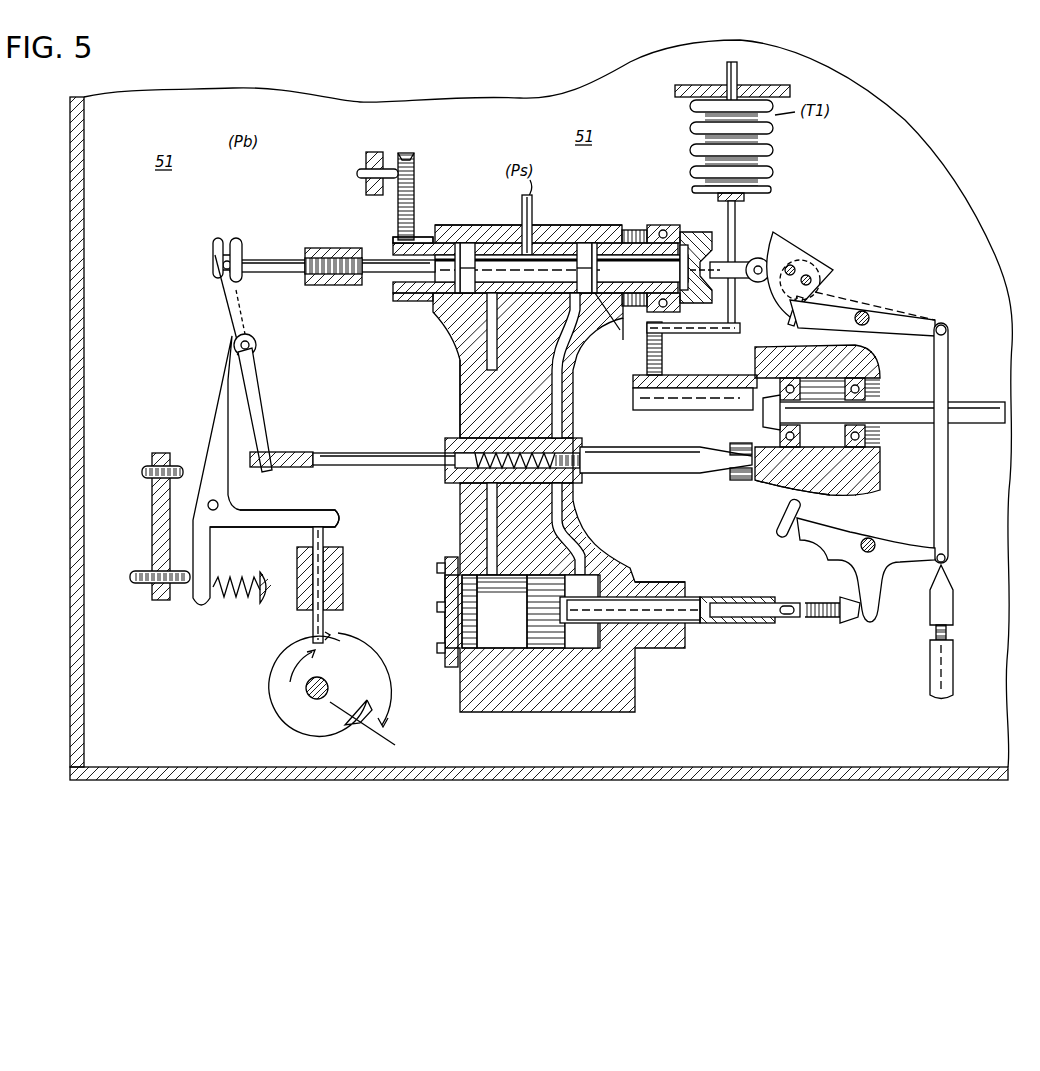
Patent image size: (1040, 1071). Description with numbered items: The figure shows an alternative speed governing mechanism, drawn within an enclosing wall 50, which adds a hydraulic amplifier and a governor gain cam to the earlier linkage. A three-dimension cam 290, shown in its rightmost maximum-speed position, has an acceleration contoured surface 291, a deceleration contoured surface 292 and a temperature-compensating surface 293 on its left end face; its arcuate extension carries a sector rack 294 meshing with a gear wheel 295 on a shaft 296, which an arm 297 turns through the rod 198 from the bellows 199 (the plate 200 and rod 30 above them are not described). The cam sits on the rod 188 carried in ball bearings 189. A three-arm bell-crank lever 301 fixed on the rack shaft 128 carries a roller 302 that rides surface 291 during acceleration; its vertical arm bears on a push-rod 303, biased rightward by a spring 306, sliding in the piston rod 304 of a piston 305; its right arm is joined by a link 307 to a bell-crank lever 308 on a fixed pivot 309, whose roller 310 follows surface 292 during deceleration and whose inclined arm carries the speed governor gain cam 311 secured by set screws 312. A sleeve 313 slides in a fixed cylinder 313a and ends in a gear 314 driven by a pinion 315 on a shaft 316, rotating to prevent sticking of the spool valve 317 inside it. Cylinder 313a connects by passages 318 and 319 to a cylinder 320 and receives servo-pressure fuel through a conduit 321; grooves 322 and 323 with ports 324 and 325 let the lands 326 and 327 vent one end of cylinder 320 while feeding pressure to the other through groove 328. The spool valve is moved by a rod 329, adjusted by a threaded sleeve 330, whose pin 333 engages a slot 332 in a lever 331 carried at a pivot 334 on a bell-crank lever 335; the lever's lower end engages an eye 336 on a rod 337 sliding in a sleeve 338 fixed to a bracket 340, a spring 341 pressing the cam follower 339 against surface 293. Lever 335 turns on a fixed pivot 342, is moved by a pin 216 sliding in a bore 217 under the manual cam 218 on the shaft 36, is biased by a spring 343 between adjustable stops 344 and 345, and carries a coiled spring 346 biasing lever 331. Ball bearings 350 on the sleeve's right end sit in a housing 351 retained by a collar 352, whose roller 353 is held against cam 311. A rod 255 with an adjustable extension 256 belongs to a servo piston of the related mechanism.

The housing wall 50 is at (70, 210).
The rod 30 is at (740, 72).
The shaft 36 is at (306, 690).
The rack shaft 128 is at (861, 548).
The rod 188 is at (958, 403).
The ball bearings 189 is at (875, 381).
The rod 198 is at (737, 212).
The bellows 199 is at (775, 136).
The plate 200 is at (722, 88).
The pin 216 is at (343, 590).
The fixed bore 217 is at (343, 573).
The cam 218 is at (292, 720).
The rod 255 is at (953, 660).
The screw-threaded adjustable extension 256 is at (953, 582).
The 3-dimension cam 290 is at (870, 472).
The acceleration contoured surface 291 is at (850, 510).
The deceleration contoured surface 292 is at (875, 353).
The contoured cam surface 293 is at (743, 445).
The sector rack 294 is at (697, 378).
The gear wheel 295 is at (647, 366).
The shaft 296 is at (680, 340).
The arm 297 is at (735, 325).
The three-arm bell-crank lever 301 is at (878, 568).
The roller 302 is at (783, 532).
The push-rod 303 is at (835, 622).
The piston rod 304 is at (655, 600).
The piston 305 is at (555, 606).
The spring 306 is at (828, 600).
The link 307 is at (948, 492).
The bell-crank lever 308 is at (941, 313).
The fixed pivot 309 is at (870, 312).
The roller 310 is at (788, 322).
The speed governor gain cam 311 is at (795, 252).
The set screws 312 is at (810, 278).
The sleeve 313 is at (570, 228).
The fixed cylinder 313a is at (560, 225).
The gear 314 is at (398, 243).
The pinion 315 is at (416, 158).
The shaft 316 is at (366, 170).
The spool valve 317 is at (460, 318).
The passage 318 is at (487, 345).
The passage 319 is at (585, 350).
The cylinder 320 is at (518, 634).
The conduit 321 is at (532, 200).
The annular groove 322 is at (460, 243).
The annular groove 323 is at (619, 314).
The port 324 is at (470, 243).
The port 325 is at (595, 243).
The land 326 is at (430, 300).
The land 327 is at (561, 268).
The annular groove and port 328 is at (535, 245).
The rod 329 is at (283, 240).
The threaded sleeve 330 is at (345, 228).
The lever 331 is at (262, 388).
The slot 332 is at (232, 282).
The pin 333 is at (224, 258).
The pivot 334 is at (258, 347).
The bell-crank lever 335 is at (283, 510).
The eye 336 is at (276, 452).
The rod 337 is at (392, 445).
The sleeve 338 is at (445, 440).
The cam follower 339 is at (660, 437).
The bracket 340 is at (460, 389).
The spring 341 is at (578, 435).
The fixed pivot 342 is at (220, 503).
The spring 343 is at (236, 603).
The adjustable stop 344 is at (140, 590).
The adjustable stop 345 is at (161, 453).
The coiled spring 346 is at (236, 338).
The ball bearings 350 is at (668, 228).
The housing 351 is at (690, 236).
The collar 352 is at (632, 238).
The roller 353 is at (768, 262).